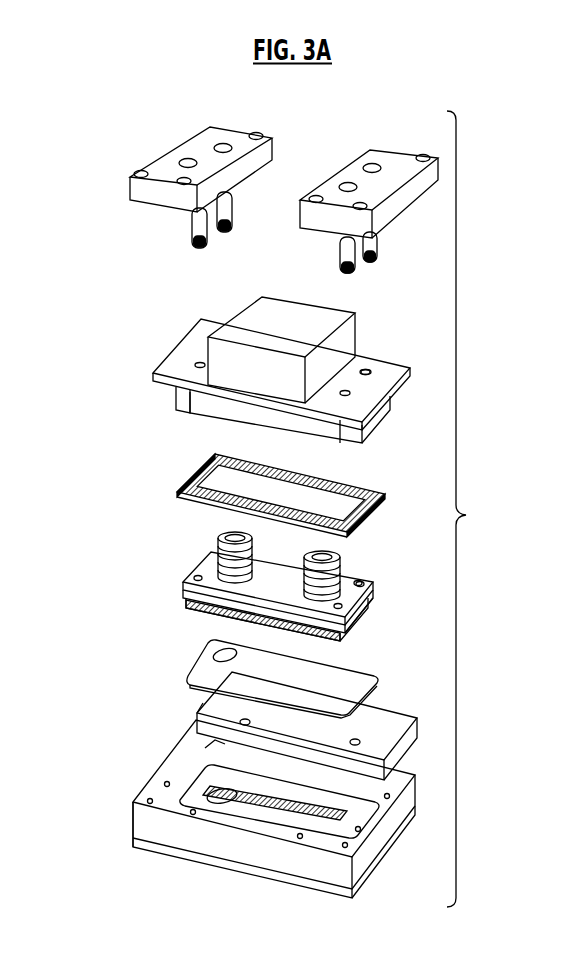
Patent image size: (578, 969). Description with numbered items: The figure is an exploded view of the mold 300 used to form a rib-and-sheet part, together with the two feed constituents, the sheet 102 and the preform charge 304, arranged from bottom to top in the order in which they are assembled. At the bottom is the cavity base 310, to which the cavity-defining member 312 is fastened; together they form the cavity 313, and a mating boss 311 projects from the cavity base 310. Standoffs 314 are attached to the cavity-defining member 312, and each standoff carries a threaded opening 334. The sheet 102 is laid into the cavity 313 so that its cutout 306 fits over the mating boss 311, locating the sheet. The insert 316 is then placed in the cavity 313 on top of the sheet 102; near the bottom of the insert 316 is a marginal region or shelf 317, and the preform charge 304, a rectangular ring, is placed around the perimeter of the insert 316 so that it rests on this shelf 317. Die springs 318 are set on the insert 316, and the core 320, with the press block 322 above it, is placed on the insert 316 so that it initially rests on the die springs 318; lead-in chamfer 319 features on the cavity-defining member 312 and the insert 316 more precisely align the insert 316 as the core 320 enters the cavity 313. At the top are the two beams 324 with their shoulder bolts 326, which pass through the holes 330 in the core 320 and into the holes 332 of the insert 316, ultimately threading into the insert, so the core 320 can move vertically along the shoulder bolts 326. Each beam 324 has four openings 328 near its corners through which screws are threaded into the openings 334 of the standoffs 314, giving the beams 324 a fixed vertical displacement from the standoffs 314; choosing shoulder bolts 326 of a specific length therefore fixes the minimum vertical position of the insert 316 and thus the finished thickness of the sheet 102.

The mold 300 is at (485, 509).
The sheet 102 is at (203, 673).
The preform charge 304 is at (182, 492).
The cutout 306 is at (213, 655).
The cavity base 310 is at (232, 864).
The mating boss 311 is at (212, 790).
The cavity-defining member 312 is at (140, 818).
The cavity 313 is at (328, 812).
The standoffs 314 is at (210, 727).
The insert 316 is at (207, 600).
The shelf 317 is at (375, 604).
The die springs 318 is at (233, 563).
The lead-in chamfer 319 is at (210, 752).
The core 320 is at (198, 405).
The press block 322 is at (237, 368).
The beams 324 is at (190, 145).
The shoulder bolts 326 is at (196, 218).
The openings 328 is at (371, 150).
The holes 330 is at (366, 372).
The holes 332 is at (359, 582).
The openings 334 is at (207, 703).